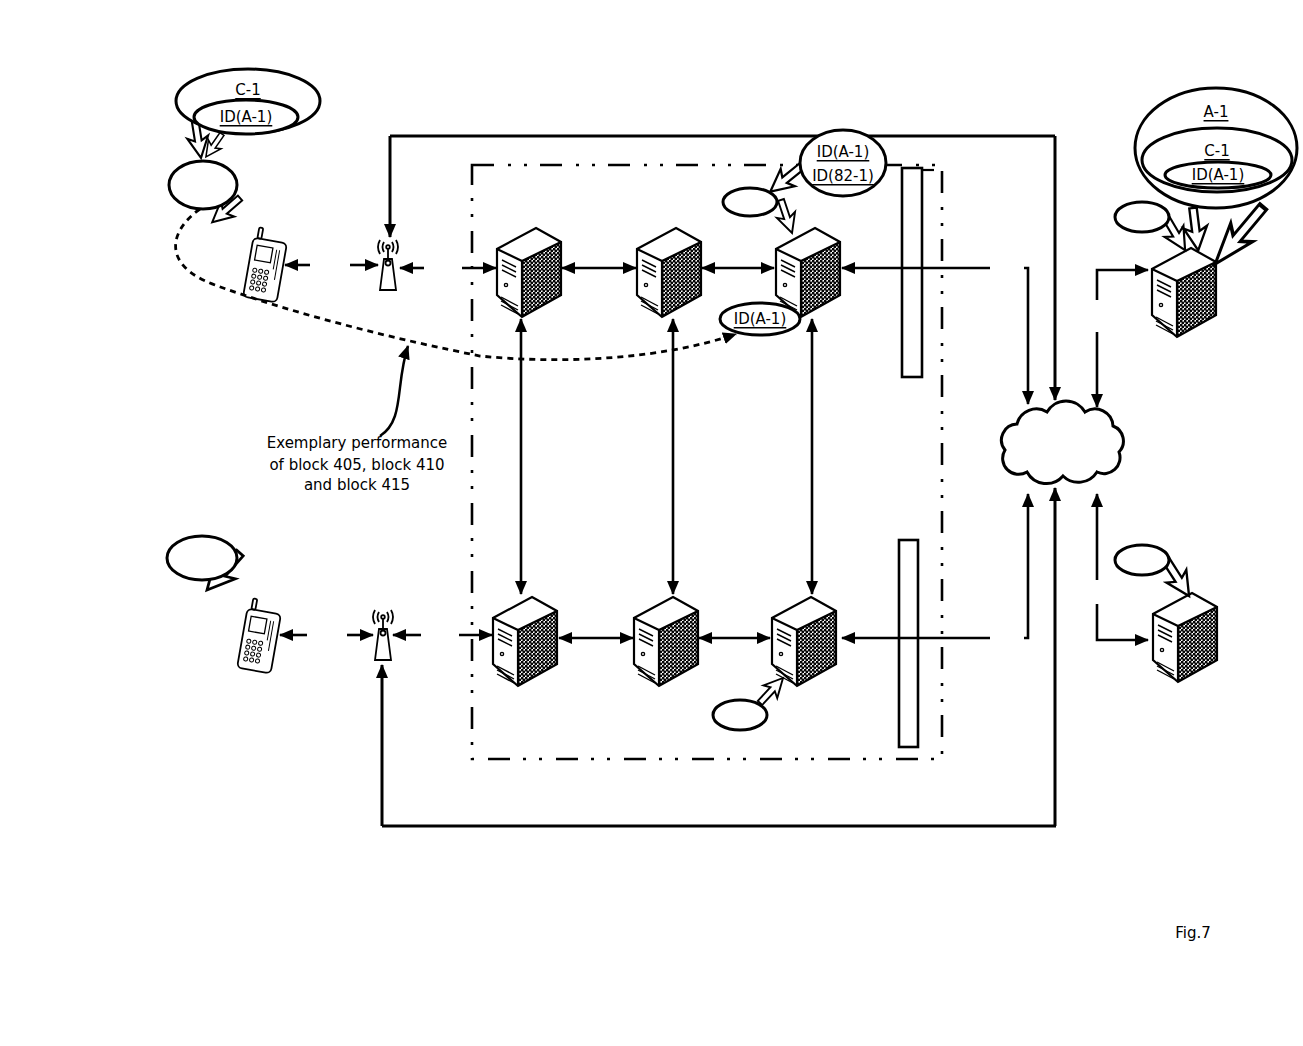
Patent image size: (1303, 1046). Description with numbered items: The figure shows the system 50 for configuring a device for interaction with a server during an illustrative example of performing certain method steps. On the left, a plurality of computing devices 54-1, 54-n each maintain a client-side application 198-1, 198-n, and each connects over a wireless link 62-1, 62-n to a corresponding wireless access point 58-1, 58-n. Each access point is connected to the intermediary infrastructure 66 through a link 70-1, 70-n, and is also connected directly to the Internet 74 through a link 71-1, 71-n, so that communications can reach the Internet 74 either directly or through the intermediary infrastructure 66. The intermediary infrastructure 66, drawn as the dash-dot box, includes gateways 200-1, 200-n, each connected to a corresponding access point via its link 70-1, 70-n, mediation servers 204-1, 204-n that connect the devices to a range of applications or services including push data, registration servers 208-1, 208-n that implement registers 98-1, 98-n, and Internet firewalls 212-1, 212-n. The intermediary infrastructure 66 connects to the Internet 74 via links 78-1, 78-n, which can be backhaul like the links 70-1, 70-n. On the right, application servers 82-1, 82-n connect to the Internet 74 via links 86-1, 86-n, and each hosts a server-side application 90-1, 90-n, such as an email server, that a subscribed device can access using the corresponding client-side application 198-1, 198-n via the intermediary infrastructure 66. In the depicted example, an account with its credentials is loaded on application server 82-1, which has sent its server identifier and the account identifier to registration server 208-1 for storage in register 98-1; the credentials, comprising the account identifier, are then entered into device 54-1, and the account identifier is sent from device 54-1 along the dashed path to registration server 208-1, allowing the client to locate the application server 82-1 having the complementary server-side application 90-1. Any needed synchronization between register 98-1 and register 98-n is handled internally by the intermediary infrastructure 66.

The system 50 is at (287, 831).
The computing device 54-1 is at (266, 305).
The computing device 54-n is at (258, 676).
The wireless access point 58-1 is at (385, 294).
The wireless access point 58-n is at (373, 622).
The wireless link 62-1 is at (331, 265).
The wireless link 62-n is at (326, 635).
The intermediary infrastructure 66 is at (467, 732).
The link 70-1 is at (448, 268).
The link 70-n is at (442, 635).
The link 71-1 is at (384, 180).
The link 71-n is at (377, 764).
The Internet 74 is at (1062, 442).
The link 78-1 is at (935, 331).
The link 78-n is at (935, 570).
The application server 82-1 is at (1186, 338).
The application server 82-n is at (1175, 684).
The link 86-1 is at (1112, 338).
The link 86-n is at (1114, 567).
The server-side application 90-1 is at (1142, 217).
The server-side application 90-n is at (1142, 560).
The register 98-1 is at (750, 202).
The register 98-n is at (740, 715).
The client-side application 198-1 is at (203, 185).
The client-side application 198-n is at (202, 558).
The gateway 200-1 is at (558, 304).
The gateway 200-n is at (544, 600).
The mediation server 204-1 is at (698, 306).
The mediation server 204-n is at (697, 600).
The registration server 208-1 is at (831, 306).
The registration server 208-n is at (834, 600).
The Internet firewall 212-1 is at (903, 378).
The Internet firewall 212-n is at (898, 540).